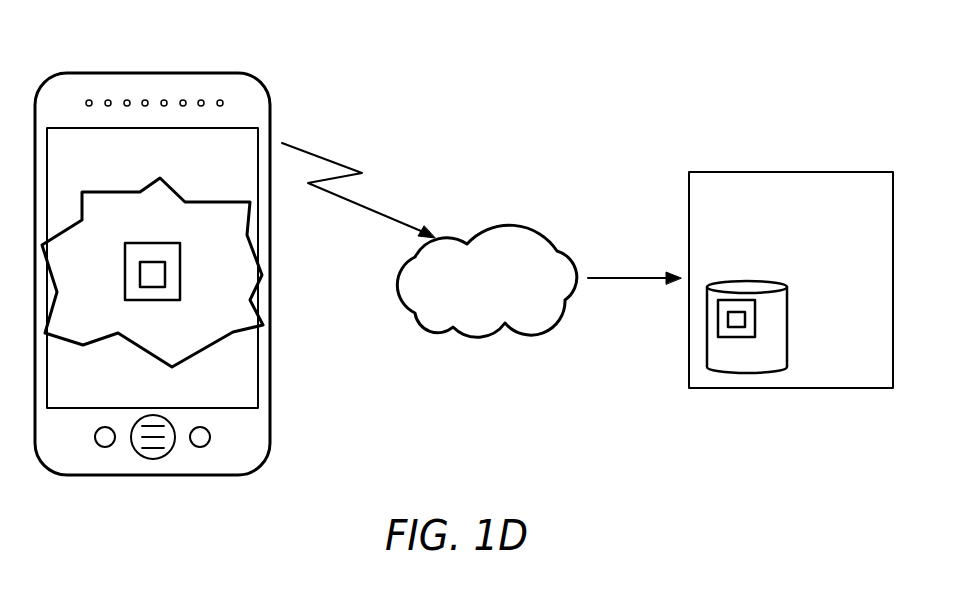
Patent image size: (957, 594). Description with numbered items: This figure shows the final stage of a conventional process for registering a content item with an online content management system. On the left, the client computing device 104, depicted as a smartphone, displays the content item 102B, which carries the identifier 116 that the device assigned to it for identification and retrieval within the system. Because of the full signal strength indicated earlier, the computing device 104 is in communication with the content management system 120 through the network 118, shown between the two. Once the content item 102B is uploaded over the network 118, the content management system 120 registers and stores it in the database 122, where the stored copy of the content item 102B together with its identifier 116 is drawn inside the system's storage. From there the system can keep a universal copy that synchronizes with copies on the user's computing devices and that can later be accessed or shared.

The client computing device 104 is at (150, 73).
The content item 102B is at (150, 243).
The identifier 116 is at (146, 287).
The network 118 is at (505, 313).
The content management system 120 is at (857, 310).
The database 122 is at (757, 367).